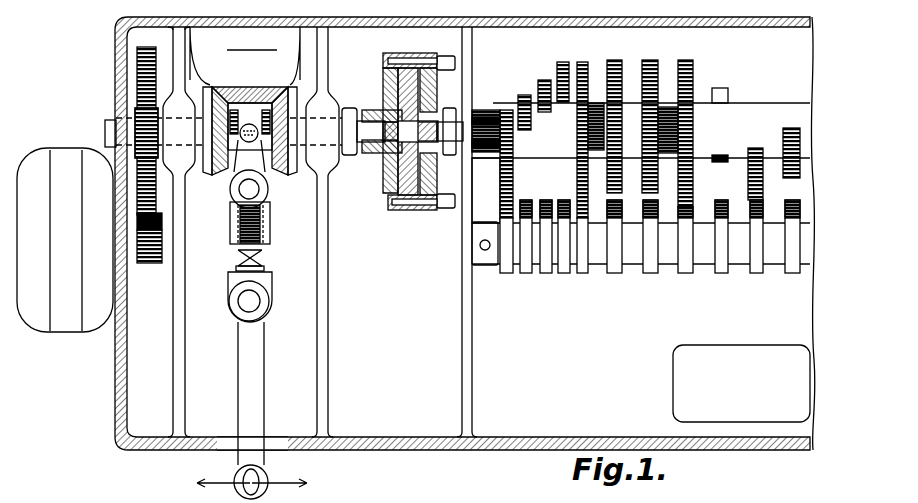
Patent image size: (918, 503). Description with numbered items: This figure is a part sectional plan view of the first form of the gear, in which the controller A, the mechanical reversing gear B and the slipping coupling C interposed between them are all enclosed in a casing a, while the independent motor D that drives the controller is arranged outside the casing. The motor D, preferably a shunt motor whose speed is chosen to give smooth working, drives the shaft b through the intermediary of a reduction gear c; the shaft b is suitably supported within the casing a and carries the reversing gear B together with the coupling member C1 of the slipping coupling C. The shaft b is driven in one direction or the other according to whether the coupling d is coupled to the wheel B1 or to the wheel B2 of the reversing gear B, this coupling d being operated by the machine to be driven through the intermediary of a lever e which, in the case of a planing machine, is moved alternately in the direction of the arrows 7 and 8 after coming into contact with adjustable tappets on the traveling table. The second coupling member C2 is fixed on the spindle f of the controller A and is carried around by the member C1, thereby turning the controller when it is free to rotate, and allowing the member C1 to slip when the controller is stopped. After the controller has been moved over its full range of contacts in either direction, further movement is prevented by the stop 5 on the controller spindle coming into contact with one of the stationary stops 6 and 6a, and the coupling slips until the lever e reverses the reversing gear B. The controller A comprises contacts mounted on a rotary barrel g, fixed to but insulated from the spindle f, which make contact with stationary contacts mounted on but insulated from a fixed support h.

The casing a is at (498, 25).
The controller A is at (727, 115).
The mechanical reversing gear B is at (250, 115).
The wheel B1 is at (218, 168).
The wheel B2 is at (280, 168).
The shaft b is at (362, 142).
The slipping coupling C is at (420, 55).
The coupling member C1 is at (390, 175).
The second coupling member C2 is at (418, 210).
The reduction gear c is at (160, 232).
The independent motor D is at (82, 333).
The coupling d is at (247, 118).
The lever e is at (258, 356).
The spindle f is at (443, 150).
The rotary barrel g is at (562, 147).
The fixed support h is at (497, 268).
The stop 5 is at (497, 105).
The stationary stop 6 is at (474, 110).
The stationary stop 6a is at (477, 160).
The arrow 7 is at (223, 474).
The arrow 8 is at (279, 474).